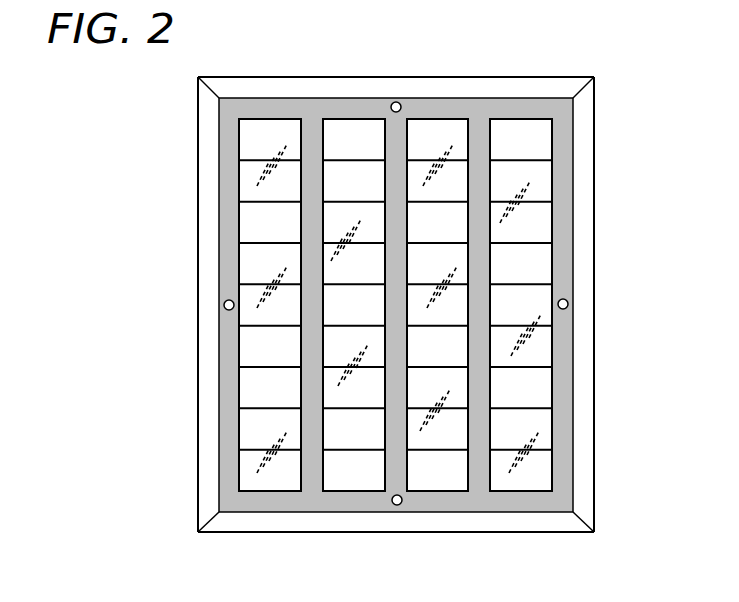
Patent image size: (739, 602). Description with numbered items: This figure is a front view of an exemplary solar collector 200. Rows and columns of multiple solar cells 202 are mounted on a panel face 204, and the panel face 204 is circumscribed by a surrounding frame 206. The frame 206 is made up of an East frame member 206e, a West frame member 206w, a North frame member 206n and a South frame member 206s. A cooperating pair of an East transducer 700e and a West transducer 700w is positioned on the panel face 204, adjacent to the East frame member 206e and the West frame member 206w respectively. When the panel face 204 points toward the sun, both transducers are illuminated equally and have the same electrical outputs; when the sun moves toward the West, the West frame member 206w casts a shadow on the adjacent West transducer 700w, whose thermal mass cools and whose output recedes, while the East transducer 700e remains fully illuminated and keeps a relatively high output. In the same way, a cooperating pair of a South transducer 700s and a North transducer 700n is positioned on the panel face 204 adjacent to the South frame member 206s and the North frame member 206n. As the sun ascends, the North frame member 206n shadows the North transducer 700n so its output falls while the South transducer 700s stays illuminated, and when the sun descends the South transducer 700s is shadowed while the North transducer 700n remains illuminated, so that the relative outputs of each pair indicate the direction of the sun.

The solar collector 200 is at (387, 302).
The solar cells 202 is at (365, 128).
The panel face 204 is at (225, 185).
The frame 206 is at (385, 302).
The North frame member 206n is at (540, 76).
The East frame member 206e is at (583, 407).
The South frame member 206s is at (480, 522).
The West frame member 206w is at (205, 425).
The North transducer 700n is at (396, 102).
The East transducer 700e is at (569, 304).
The South transducer 700s is at (397, 505).
The West transducer 700w is at (224, 305).